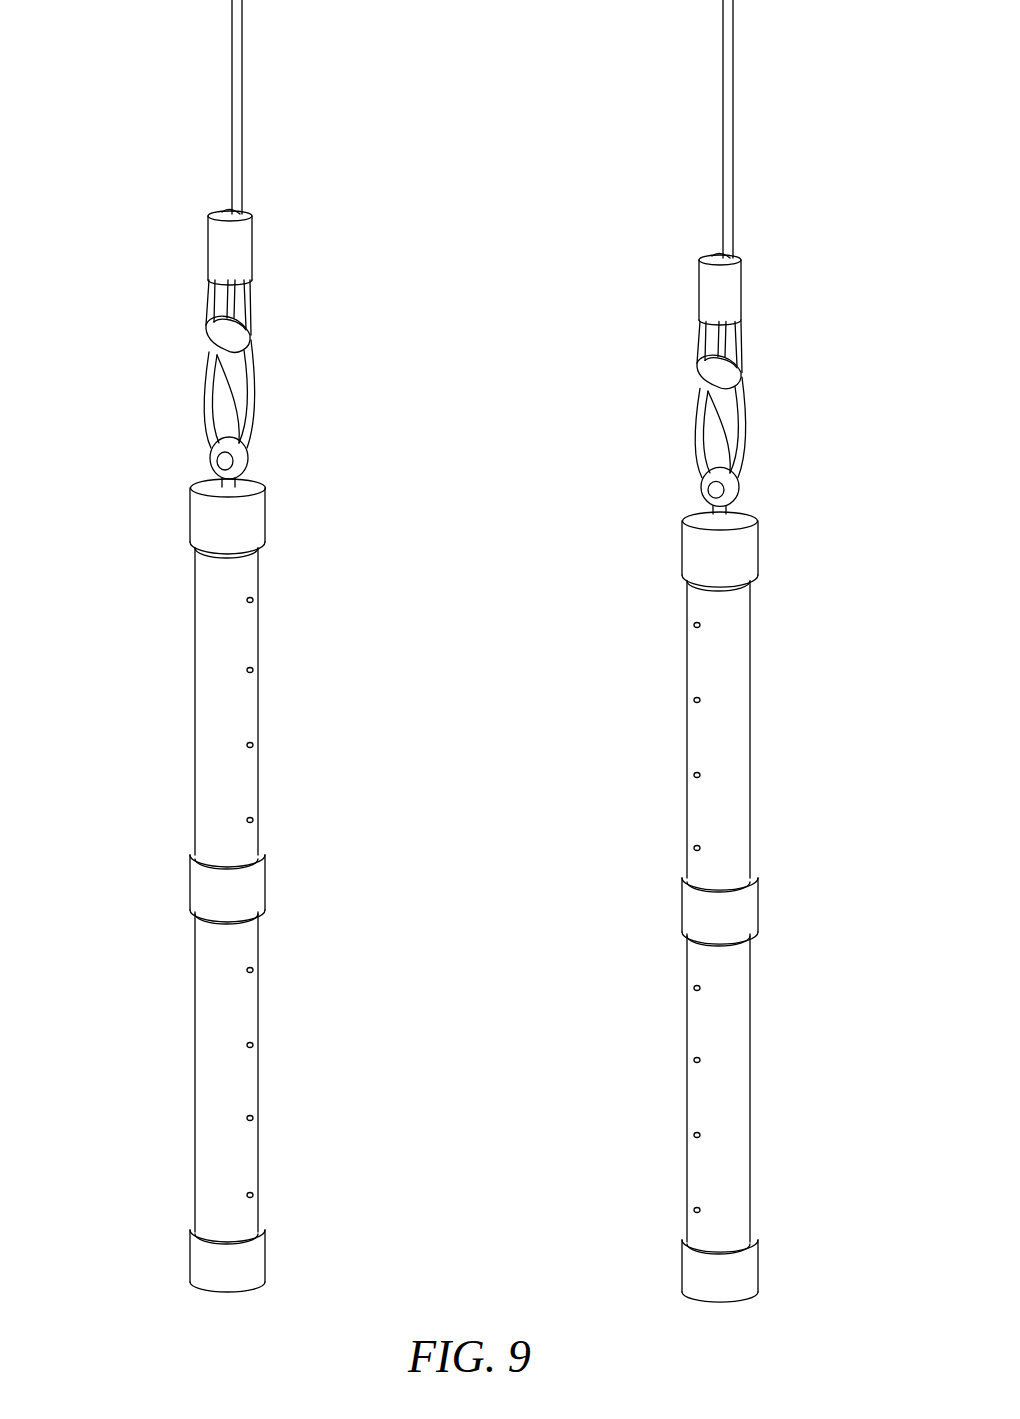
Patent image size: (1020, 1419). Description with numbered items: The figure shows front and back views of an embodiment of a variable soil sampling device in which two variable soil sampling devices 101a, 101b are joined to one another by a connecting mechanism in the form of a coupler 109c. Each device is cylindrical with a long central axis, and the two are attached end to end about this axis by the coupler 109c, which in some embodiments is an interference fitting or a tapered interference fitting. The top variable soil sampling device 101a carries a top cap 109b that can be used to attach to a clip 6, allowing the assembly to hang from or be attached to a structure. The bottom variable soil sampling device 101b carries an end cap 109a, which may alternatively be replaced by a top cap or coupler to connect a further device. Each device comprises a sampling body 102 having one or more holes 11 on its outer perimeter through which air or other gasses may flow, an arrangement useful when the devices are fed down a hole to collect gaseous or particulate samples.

The clip 6 is at (250, 420).
The holes 11 is at (252, 670).
The top variable soil sampling device 101a is at (128, 612).
The bottom variable soil sampling device 101b is at (125, 995).
The sampling body 102 is at (195, 715).
The end cap 109a is at (262, 1265).
The top cap 109b is at (265, 520).
The coupler 109c is at (262, 890).